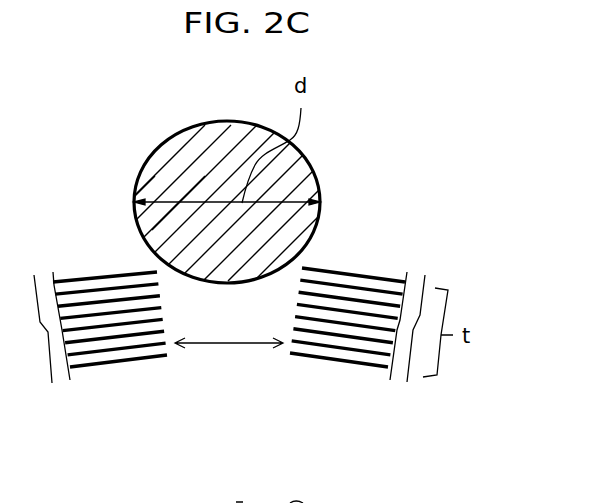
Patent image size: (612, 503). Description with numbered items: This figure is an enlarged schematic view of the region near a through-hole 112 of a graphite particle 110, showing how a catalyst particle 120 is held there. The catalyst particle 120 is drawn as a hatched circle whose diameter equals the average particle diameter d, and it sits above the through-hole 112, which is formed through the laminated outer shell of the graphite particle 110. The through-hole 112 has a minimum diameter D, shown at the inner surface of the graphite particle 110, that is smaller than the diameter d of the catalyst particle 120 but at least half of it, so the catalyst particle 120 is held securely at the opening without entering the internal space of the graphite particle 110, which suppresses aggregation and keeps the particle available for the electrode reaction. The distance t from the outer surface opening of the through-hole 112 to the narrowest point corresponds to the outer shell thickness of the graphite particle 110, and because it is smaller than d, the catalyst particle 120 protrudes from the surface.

The catalyst particle 120 is at (165, 142).
The graphite particle 110 is at (365, 259).
The through-hole 112 is at (228, 360).